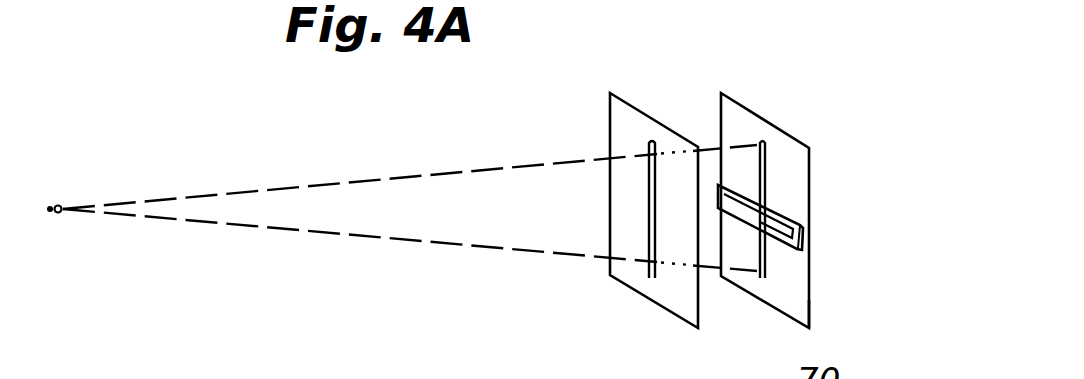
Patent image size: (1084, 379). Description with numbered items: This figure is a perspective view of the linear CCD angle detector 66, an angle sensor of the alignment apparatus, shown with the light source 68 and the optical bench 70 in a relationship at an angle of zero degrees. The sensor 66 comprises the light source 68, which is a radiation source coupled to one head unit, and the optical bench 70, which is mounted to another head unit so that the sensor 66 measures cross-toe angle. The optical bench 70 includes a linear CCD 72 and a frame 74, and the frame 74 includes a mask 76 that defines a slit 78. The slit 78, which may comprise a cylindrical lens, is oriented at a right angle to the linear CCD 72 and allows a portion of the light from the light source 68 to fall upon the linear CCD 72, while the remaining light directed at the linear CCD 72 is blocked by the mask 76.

The linear CCD angle detector 66 is at (285, 108).
The light source 68 is at (52, 216).
The optical bench 70 is at (788, 125).
The linear CCD 72 is at (728, 166).
The frame 74 is at (814, 302).
The mask 76 is at (606, 116).
The slit 78 is at (650, 278).